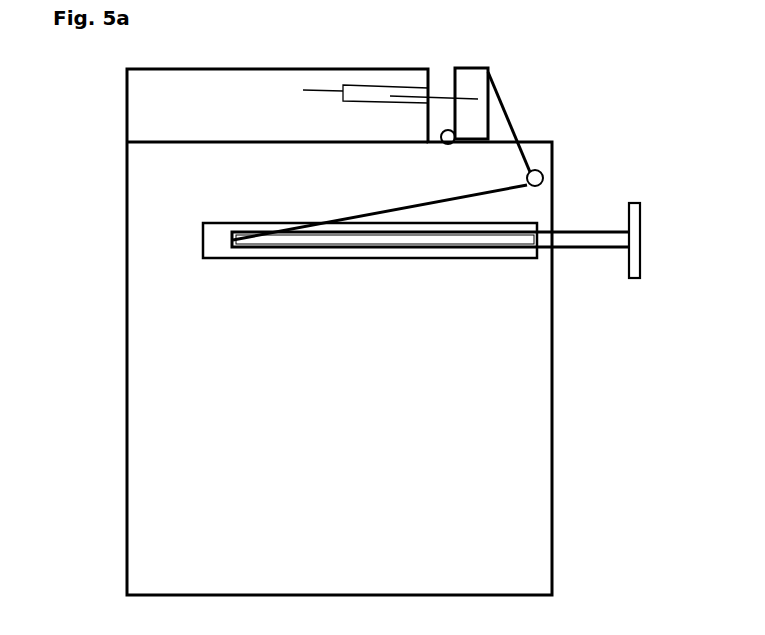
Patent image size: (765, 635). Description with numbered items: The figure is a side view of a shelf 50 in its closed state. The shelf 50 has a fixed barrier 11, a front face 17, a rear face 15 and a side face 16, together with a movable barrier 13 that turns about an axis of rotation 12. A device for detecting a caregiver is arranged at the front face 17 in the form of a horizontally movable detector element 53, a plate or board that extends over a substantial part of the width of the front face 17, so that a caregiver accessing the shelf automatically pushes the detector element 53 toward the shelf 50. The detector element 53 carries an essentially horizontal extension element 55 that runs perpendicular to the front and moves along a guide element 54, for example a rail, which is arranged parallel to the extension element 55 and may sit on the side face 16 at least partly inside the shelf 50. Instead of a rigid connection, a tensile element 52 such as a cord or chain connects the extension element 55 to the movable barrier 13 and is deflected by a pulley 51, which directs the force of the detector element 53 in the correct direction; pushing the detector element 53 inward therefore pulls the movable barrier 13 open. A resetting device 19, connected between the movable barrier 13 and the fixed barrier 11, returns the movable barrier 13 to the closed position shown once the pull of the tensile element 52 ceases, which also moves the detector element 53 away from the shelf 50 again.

The shelf 50 is at (103, 150).
The fixed barrier 11 is at (190, 68).
The axis of rotation 12 is at (444, 146).
The movable barrier 13 is at (489, 69).
The rear face 15 is at (108, 500).
The side face 16 is at (127, 440).
The front face 17 is at (575, 465).
The resetting device 19 is at (379, 76).
The pulley 51 is at (555, 176).
The tensile element 52 is at (513, 120).
The movable detector element 53 is at (641, 223).
The guide element 54 is at (518, 258).
The extension element 55 is at (232, 247).